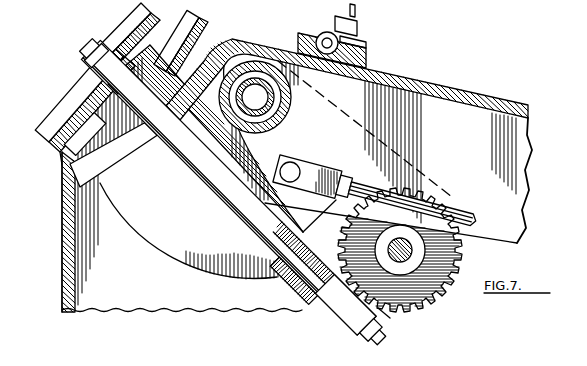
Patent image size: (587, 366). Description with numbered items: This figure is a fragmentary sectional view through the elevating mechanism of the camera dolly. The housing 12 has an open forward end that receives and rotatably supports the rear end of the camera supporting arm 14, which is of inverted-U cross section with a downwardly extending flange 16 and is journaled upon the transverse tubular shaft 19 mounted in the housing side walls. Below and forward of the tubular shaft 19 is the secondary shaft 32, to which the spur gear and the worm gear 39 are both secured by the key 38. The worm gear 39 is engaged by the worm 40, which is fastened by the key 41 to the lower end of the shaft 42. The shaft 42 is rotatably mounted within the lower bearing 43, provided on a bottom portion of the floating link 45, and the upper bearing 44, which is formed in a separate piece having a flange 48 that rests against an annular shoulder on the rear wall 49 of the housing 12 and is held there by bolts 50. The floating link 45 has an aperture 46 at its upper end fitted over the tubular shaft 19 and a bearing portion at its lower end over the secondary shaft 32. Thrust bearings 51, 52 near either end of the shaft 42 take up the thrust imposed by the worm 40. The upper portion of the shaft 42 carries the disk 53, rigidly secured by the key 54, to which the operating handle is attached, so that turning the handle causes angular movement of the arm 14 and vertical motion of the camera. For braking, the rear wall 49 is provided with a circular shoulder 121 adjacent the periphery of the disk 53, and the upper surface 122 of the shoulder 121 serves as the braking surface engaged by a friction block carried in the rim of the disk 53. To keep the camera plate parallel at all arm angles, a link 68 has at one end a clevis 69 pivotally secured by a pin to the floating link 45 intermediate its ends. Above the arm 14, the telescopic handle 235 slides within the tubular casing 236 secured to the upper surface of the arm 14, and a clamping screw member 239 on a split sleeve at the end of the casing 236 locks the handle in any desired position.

The housing 12 is at (57, 251).
The camera supporting arm 14 is at (496, 97).
The flange 16 is at (456, 157).
The tubular shaft 19 is at (286, 103).
The secondary shaft 32 is at (378, 240).
The key 38 is at (388, 254).
The worm gear 39 is at (444, 293).
The worm 40 is at (356, 336).
The key 41 is at (384, 317).
The shaft 42 is at (204, 176).
The bearing 43 is at (290, 283).
The bearing 44 is at (180, 92).
The floating link 45 is at (284, 152).
The aperture 46 is at (280, 90).
The flange 48 is at (100, 124).
The rear wall 49 is at (61, 204).
The bolts 50 is at (162, 56).
The thrust bearing 51 is at (112, 88).
The thrust bearing 52 is at (310, 308).
The disk 53 is at (48, 110).
The key 54 is at (104, 44).
The link 68 is at (462, 214).
The clevis 69 is at (314, 163).
The circular shoulder 121 is at (54, 163).
The upper surface 122 is at (54, 150).
The telescopic handle 235 is at (321, 32).
The tubular casing 236 is at (355, 42).
The clamping screw member 239 is at (355, 23).